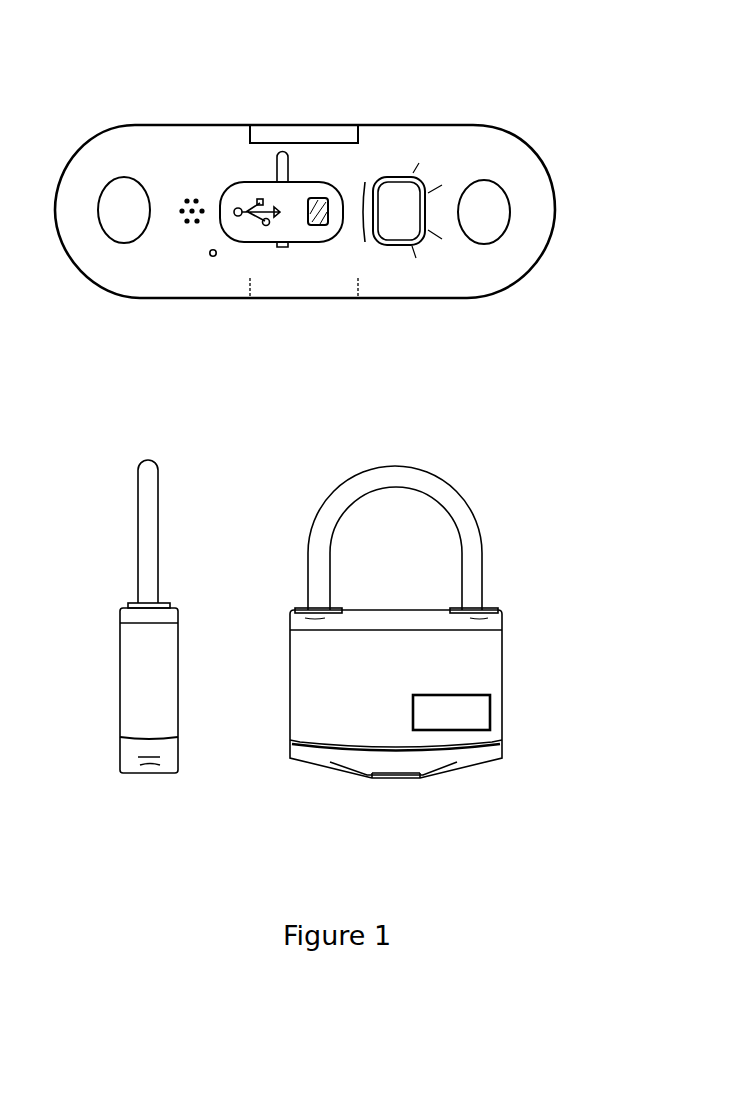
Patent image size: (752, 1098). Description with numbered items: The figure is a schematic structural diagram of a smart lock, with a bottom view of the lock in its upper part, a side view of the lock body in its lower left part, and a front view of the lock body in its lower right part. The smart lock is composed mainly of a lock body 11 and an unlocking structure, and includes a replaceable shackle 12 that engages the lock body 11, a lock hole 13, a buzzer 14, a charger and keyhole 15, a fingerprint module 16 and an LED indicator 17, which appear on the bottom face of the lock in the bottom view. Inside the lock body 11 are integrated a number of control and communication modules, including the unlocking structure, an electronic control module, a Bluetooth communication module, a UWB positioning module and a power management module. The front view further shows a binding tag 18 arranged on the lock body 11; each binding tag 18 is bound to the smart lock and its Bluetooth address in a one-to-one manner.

The lock body 11 is at (493, 673).
The replaceable shackle 12 is at (458, 513).
The lock hole 13 is at (125, 198).
The buzzer 14 is at (203, 200).
The charger and keyhole 15 is at (280, 198).
The fingerprint module 16 is at (393, 203).
The LED indicator 17 is at (213, 257).
The binding tag 18 is at (448, 712).